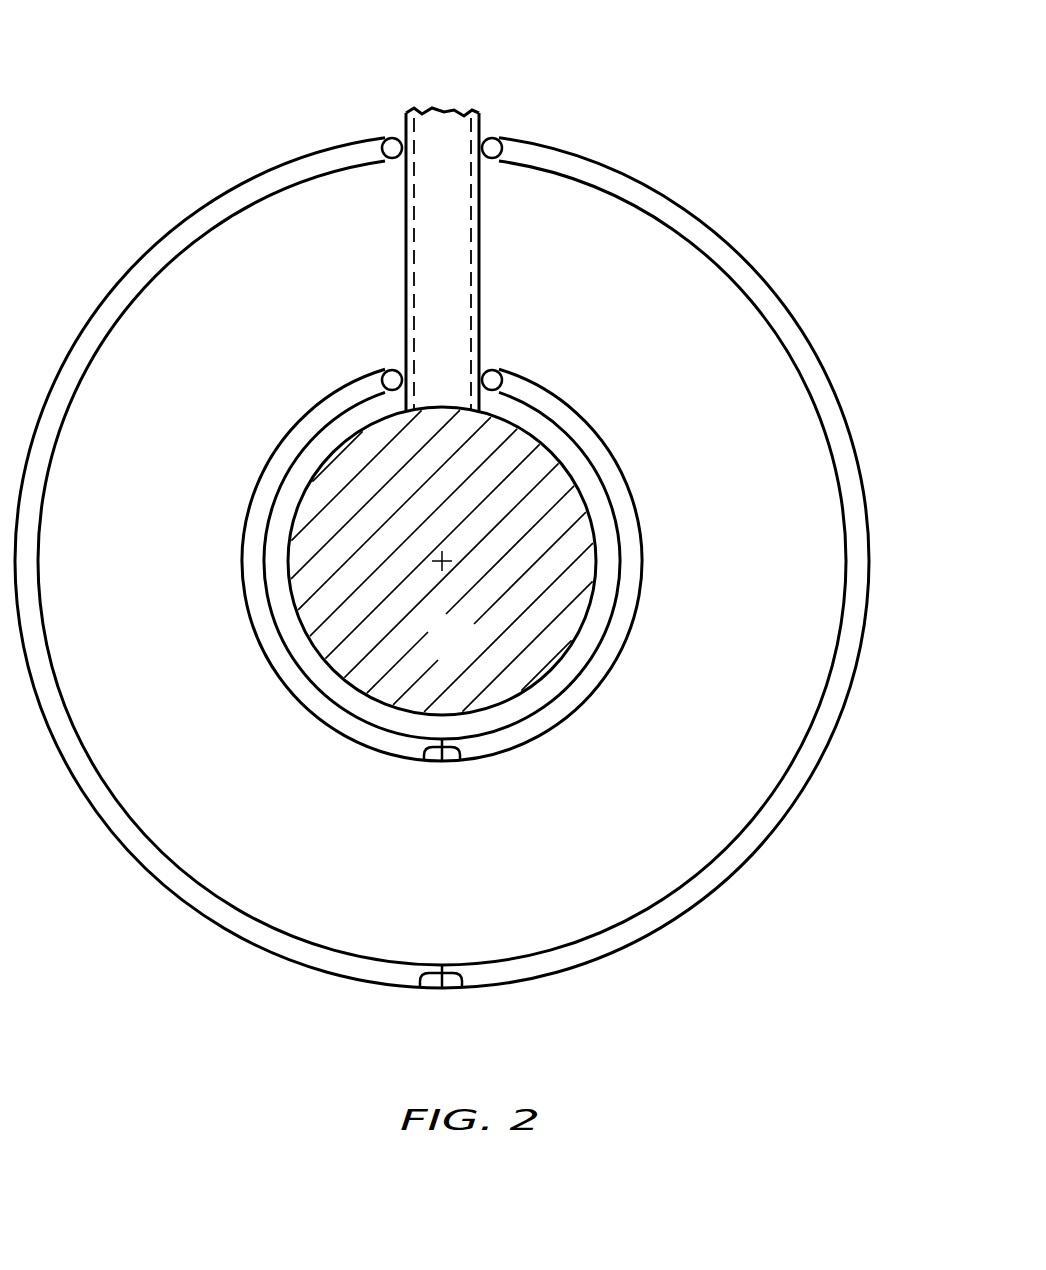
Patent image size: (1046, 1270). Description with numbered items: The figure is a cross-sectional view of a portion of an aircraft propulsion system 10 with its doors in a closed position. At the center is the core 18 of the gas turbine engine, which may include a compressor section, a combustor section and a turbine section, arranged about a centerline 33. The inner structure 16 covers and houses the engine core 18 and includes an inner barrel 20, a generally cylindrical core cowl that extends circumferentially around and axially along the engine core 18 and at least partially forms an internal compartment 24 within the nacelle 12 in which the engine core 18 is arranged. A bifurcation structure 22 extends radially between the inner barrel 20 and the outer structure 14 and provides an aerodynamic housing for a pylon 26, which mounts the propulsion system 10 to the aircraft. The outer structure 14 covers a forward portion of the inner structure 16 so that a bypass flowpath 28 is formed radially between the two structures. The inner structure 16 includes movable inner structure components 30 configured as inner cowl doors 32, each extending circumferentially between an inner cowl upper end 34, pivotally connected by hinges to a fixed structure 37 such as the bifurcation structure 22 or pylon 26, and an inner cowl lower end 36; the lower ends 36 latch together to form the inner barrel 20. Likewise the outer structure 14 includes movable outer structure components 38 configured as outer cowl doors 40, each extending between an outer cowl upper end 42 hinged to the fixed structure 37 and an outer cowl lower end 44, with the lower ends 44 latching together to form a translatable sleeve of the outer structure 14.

The aircraft propulsion system 10 is at (697, 79).
The nacelle 12 is at (728, 182).
The outer structure 14 is at (757, 268).
The inner structure 16 is at (594, 425).
The core 18 is at (600, 522).
The inner barrel 20 is at (595, 424).
The bifurcation structure 22 is at (480, 280).
The internal compartment 24 is at (600, 588).
The pylon 26 is at (416, 250).
The bypass flowpath 28 is at (332, 832).
The inner structure components 30 is at (269, 663).
The inner cowl doors 32 is at (670, 703).
The centerline 33 is at (447, 566).
The inner cowl upper end 34 is at (385, 371).
The inner cowl lower end 36 is at (424, 761).
The fixed structure 37 is at (441, 108).
The outer structure components 38 is at (181, 219).
The outer cowl doors 40 is at (870, 285).
The outer cowl upper end 42 is at (386, 138).
The outer cowl lower end 44 is at (420, 988).